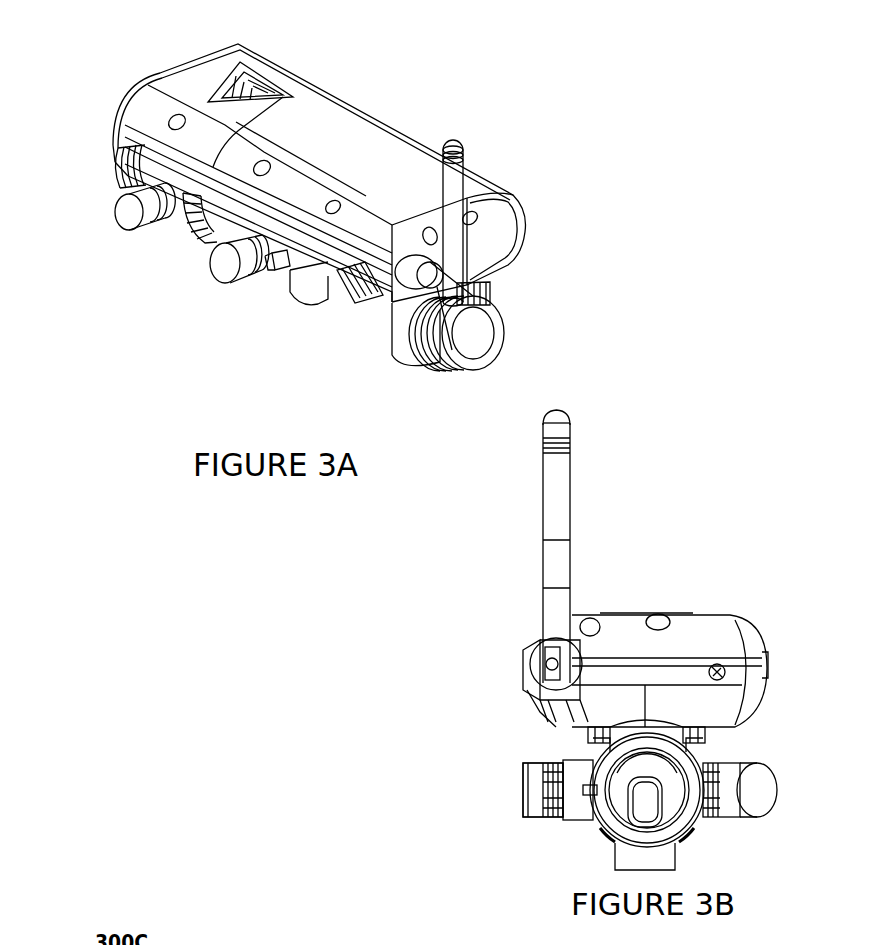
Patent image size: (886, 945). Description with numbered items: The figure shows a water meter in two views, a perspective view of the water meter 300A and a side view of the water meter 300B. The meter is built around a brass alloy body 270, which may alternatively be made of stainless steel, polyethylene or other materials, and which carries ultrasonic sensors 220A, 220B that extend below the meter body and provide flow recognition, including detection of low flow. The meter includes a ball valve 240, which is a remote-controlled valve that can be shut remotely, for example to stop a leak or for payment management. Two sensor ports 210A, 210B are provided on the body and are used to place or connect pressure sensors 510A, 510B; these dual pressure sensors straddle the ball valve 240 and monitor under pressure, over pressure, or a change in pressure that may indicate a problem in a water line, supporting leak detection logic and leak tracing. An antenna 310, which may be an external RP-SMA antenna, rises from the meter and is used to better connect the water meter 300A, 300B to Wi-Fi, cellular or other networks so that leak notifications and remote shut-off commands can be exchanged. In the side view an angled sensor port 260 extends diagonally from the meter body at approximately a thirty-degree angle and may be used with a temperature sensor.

In FIG. 3A, the water meter 300A is at (291, 159).
In FIG. 3B, the water meter 300B is at (645, 620).
In FIG. 3A, the ball valve 240 is at (284, 96).
In FIG. 3A, the antenna 310 is at (464, 136).
In FIG. 3B, the antenna 310 is at (571, 456).
In FIG. 3A, the brass alloy body 270 is at (139, 173).
In FIG. 3A, the pressure sensor 510A is at (220, 293).
In FIG. 3A, the pressure sensor 510B is at (123, 235).
In FIG. 3A, the sensor port 210A is at (277, 273).
In FIG. 3B, the sensor port 210A is at (509, 791).
In FIG. 3A, the sensor port 210B is at (171, 221).
In FIG. 3B, the sensor port 210B is at (543, 790).
In FIG. 3A, the ultrasonic sensor 220A is at (312, 318).
In FIG. 3A, the ultrasonic sensor 220B is at (413, 378).
In FIG. 3B, the angled sensor port 260 is at (755, 758).